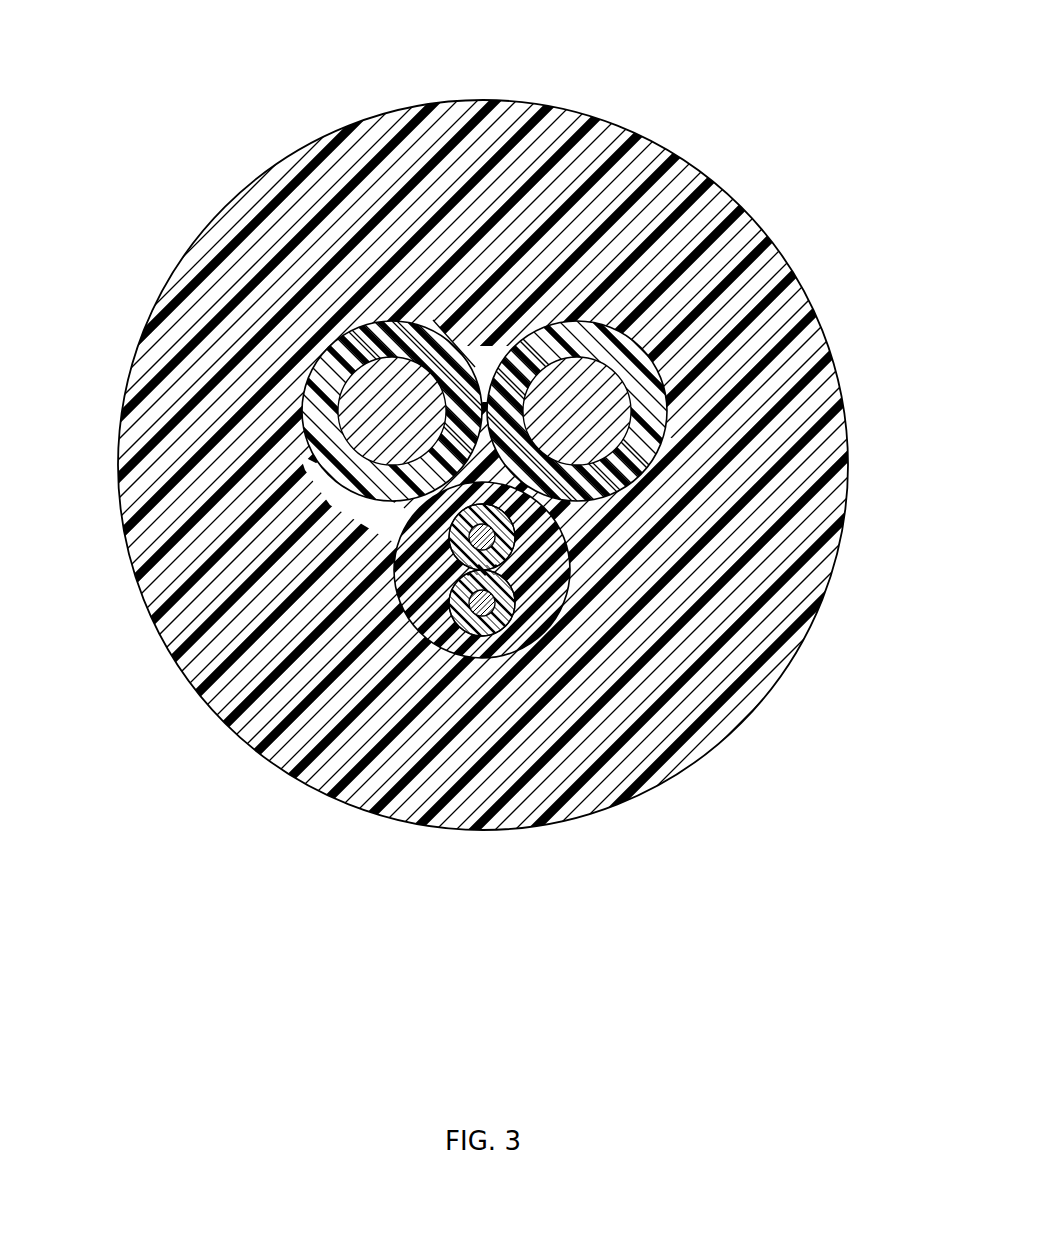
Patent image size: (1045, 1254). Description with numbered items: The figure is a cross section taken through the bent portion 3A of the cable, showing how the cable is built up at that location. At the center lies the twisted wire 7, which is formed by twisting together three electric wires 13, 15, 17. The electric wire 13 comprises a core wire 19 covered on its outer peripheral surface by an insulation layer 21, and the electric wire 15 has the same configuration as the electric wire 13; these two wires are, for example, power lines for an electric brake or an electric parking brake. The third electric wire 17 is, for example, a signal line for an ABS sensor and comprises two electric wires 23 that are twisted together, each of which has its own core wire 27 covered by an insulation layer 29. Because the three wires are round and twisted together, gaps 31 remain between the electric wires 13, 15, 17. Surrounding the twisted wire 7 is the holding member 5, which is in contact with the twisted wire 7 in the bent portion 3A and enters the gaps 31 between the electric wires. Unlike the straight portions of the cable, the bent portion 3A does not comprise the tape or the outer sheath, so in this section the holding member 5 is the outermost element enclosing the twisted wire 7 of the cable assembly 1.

The composite cable 1 is at (522, 627).
The bent portion 3A is at (502, 579).
The holding member 5 is at (826, 381).
The twisted wire 7 is at (502, 579).
The electric wire 13 is at (502, 546).
The electric wire 15 is at (614, 482).
The electric wire 17 is at (489, 739).
The core wire 19 is at (384, 400).
The insulation layer 21 is at (397, 322).
The electric wire 23 is at (481, 706).
The core wire 27 is at (480, 566).
The insulation layer 29 is at (470, 535).
The gaps 31 is at (480, 395).